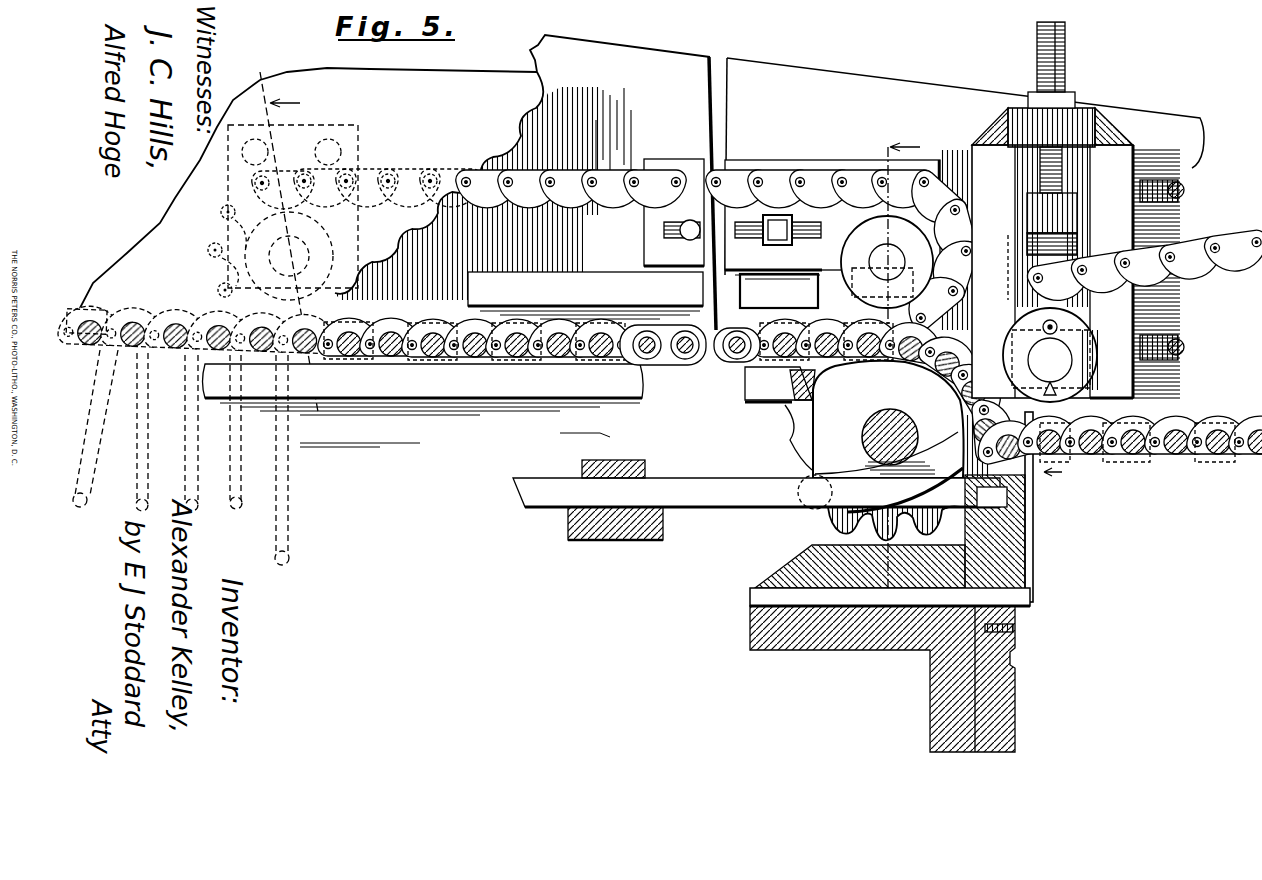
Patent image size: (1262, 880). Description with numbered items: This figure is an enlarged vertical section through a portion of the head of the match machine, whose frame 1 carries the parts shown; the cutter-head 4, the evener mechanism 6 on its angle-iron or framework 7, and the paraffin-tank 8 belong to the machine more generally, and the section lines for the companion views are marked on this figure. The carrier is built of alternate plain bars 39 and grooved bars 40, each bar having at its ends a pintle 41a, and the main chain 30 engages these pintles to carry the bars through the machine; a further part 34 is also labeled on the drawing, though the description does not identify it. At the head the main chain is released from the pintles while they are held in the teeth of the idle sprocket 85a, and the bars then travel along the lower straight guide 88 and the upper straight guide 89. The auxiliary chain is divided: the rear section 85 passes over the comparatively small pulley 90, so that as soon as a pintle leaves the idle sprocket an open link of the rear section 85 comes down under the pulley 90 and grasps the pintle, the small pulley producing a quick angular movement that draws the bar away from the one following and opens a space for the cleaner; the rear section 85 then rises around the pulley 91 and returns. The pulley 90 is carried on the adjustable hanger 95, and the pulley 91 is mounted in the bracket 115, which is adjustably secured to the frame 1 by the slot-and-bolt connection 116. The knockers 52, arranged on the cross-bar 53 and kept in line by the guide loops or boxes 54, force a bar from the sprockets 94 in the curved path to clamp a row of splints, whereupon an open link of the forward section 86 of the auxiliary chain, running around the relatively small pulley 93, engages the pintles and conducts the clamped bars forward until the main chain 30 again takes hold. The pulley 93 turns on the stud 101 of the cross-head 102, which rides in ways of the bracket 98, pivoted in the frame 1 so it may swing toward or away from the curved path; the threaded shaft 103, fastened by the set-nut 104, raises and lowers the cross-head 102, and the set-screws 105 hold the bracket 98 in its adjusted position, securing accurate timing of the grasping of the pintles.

The frame 1 is at (964, 153).
The cutter-head 4 is at (1042, 655).
The evener mechanism 6 is at (288, 243).
The angle-iron or framework 7 is at (896, 362).
The paraffin-tank 8 is at (1049, 252).
The main chain 30 is at (688, 362).
The rod 34 is at (673, 478).
The bars 39 is at (130, 360).
The bars 40 is at (178, 362).
The pintle 41a is at (275, 352).
The knockers 52 is at (770, 478).
The cross-bar 53 is at (610, 540).
The guide loops or boxes 54 is at (615, 460).
The rear section of auxiliary chain 85 is at (797, 180).
The idle sprocket 85a is at (350, 197).
The forward section of auxiliary chain 86 is at (1196, 255).
The lower straight guide 88 is at (435, 380).
The upper straight guide 89 is at (585, 295).
The pulley 90 is at (333, 238).
The pulley 91 is at (887, 262).
The pulley 93 is at (1086, 342).
The sprockets 94 is at (805, 411).
The hanger 95 is at (360, 140).
The bracket 98 is at (1052, 253).
The stud 101 is at (1050, 357).
The cross-head 102 is at (1082, 250).
The adjusting-bolt or threaded shaft 103 is at (1065, 43).
The set-nut 104 is at (1078, 96).
The set-screws 105 is at (1160, 175).
The bracket 115 is at (644, 258).
The slot-and-bolt connection 116 is at (780, 240).